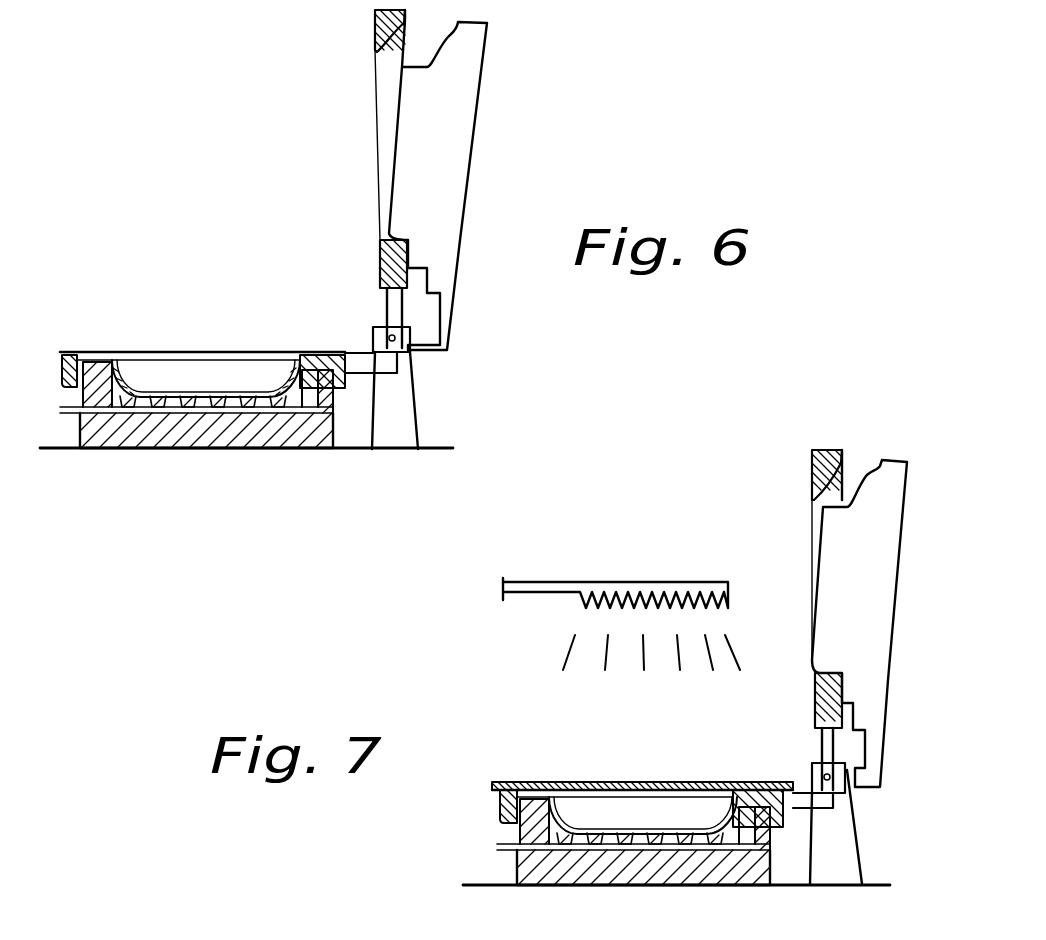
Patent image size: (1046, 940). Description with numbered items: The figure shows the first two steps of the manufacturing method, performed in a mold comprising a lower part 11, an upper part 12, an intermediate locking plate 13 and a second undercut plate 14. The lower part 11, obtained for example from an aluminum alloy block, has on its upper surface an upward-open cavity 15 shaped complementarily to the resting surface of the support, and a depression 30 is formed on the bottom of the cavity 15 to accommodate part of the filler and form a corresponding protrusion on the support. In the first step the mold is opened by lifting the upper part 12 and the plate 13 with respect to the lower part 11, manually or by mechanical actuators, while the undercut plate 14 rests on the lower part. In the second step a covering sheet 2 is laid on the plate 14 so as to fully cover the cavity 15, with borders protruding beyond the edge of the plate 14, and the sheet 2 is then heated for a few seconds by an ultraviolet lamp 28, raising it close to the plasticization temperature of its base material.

In FIG. 7, the covering sheet 2 is at (540, 782).
In FIG. 6, the lower part 11 is at (78, 430).
In FIG. 7, the lower part 11 is at (594, 846).
In FIG. 6, the upper part 12 is at (460, 168).
In FIG. 7, the upper part 12 is at (843, 563).
In FIG. 6, the intermediate locking plate 13 is at (376, 28).
In FIG. 7, the intermediate locking plate 13 is at (821, 447).
In FIG. 6, the undercut plate 14 is at (58, 352).
In FIG. 7, the undercut plate 14 is at (500, 810).
In FIG. 6, the cavity 15 is at (268, 378).
In FIG. 7, the UV lamp 28 is at (612, 582).
In FIG. 6, the depression 30 is at (186, 395).